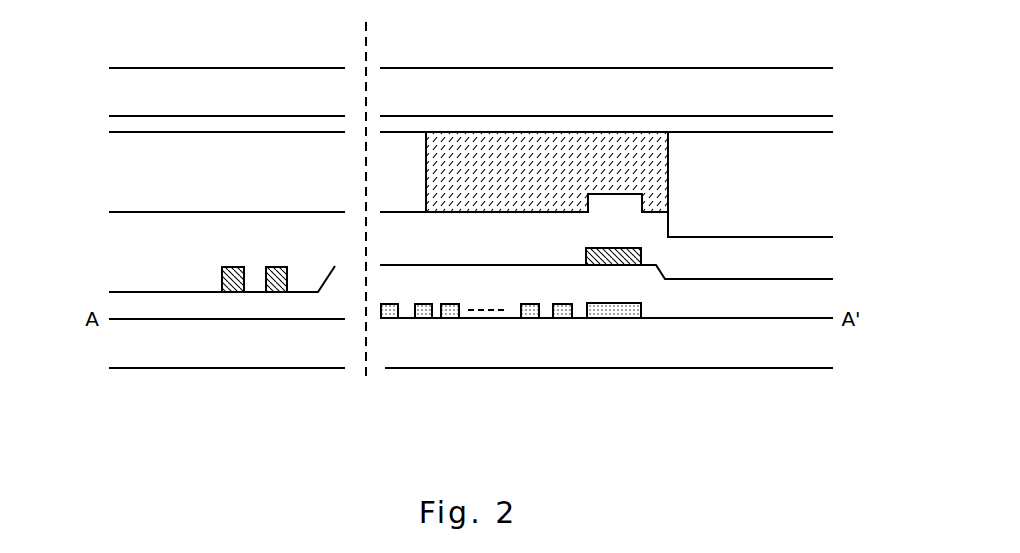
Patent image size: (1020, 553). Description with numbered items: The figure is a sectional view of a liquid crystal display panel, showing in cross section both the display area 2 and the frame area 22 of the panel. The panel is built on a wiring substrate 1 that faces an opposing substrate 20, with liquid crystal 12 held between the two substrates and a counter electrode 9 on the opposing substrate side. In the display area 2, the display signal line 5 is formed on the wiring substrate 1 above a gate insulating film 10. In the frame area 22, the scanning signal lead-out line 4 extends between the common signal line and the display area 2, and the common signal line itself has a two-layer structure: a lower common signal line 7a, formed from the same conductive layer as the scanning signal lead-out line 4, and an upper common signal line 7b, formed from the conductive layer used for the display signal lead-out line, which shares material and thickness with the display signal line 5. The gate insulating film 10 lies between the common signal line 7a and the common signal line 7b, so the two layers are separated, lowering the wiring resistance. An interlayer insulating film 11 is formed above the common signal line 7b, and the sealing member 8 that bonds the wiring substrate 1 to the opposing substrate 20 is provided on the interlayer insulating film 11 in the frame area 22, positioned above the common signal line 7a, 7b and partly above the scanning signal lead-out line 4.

The wiring substrate 1 is at (238, 361).
The display area 2 is at (268, 417).
The frame area 22 is at (514, 417).
The scanning signal lead-out line 4 is at (382, 323).
The display signal line 5 is at (212, 265).
The common signal line 7a is at (642, 310).
The common signal line 7b is at (586, 255).
The sealing member 8 is at (556, 141).
The counter electrode 9 is at (136, 121).
The gate insulating film 10 is at (719, 309).
The interlayer insulating film 11 is at (692, 247).
The liquid crystal 12 is at (183, 164).
The opposing substrate 20 is at (204, 75).